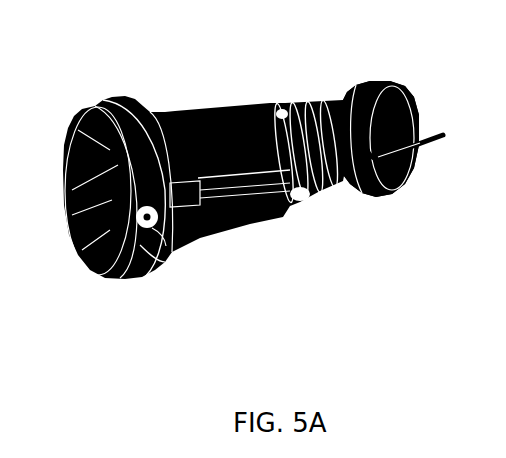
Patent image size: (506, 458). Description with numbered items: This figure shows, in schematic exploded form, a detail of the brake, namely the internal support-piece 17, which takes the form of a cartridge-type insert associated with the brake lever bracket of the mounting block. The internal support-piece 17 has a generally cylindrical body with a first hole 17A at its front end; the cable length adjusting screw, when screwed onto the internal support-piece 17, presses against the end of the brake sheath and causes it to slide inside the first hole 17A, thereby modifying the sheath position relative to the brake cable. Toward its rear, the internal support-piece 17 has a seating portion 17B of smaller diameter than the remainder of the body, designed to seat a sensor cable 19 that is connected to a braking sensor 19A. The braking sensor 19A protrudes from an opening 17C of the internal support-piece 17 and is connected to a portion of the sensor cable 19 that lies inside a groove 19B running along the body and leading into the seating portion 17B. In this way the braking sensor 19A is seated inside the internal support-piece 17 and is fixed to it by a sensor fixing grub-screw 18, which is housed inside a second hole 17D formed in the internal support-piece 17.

The internal support-piece 17 is at (213, 107).
The first hole 17A is at (70, 207).
The seating portion 17B is at (384, 193).
The opening 17C is at (130, 258).
The second hole 17D is at (157, 272).
The sensor fixing grub-screw 18 is at (148, 232).
The sensor cable 19 is at (445, 135).
The braking sensor 19A is at (178, 198).
The groove 19B is at (257, 193).